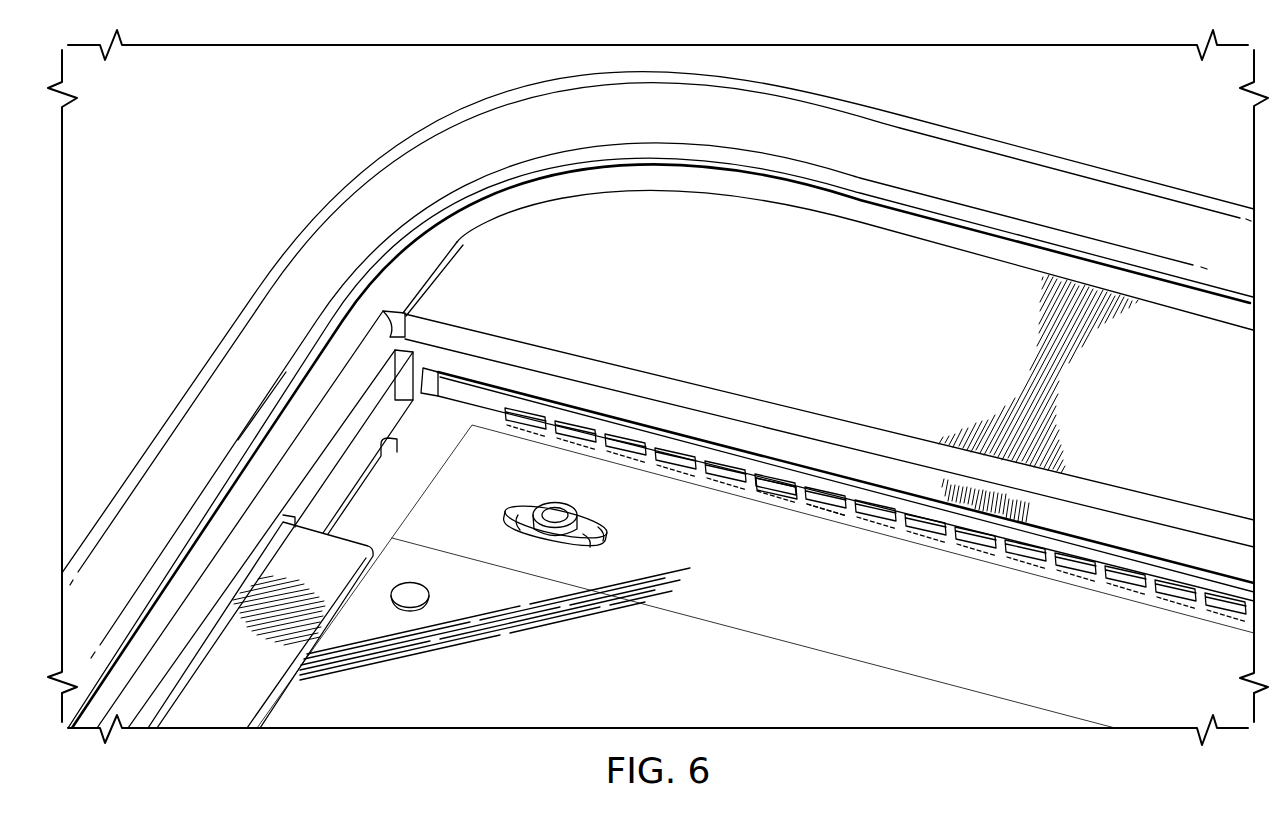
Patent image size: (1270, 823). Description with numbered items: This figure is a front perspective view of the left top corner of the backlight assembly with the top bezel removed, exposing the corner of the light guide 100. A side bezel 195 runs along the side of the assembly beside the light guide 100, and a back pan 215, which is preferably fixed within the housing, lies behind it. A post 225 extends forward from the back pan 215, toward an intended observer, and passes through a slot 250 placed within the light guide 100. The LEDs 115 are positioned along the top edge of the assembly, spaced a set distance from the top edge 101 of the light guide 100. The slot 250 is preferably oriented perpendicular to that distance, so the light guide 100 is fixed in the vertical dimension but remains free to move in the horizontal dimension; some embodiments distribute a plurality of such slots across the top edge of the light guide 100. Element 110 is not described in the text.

The light guide 100 is at (437, 413).
The retention tab 110 is at (697, 452).
The LEDs 115 is at (770, 480).
The top edge of the light guide 101 is at (823, 502).
The back pan 215 is at (360, 472).
The side bezel 195 is at (248, 678).
The post 225 is at (553, 502).
The slot 250 is at (607, 523).